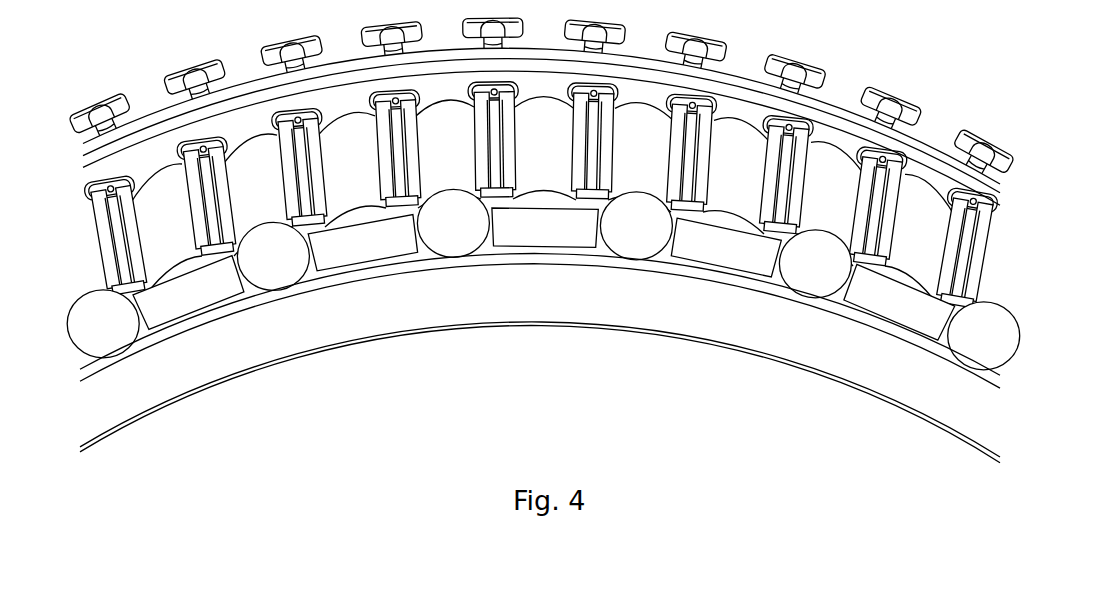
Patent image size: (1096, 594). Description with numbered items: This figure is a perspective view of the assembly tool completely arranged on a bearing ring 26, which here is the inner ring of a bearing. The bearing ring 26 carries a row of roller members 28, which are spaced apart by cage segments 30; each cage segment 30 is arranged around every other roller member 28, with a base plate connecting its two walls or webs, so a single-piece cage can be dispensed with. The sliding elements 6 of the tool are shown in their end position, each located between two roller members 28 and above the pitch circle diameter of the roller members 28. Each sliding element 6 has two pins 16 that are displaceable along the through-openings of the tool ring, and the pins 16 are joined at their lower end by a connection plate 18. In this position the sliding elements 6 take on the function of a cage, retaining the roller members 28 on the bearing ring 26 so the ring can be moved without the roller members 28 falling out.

The sliding element 6 is at (812, 66).
The pins 16 is at (800, 173).
The connection plate 18 is at (783, 278).
The bearing ring 26 is at (748, 337).
The roller members 28 is at (742, 137).
The cage segment 30 is at (713, 250).